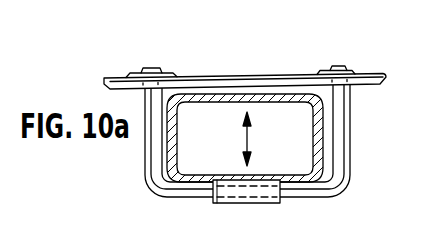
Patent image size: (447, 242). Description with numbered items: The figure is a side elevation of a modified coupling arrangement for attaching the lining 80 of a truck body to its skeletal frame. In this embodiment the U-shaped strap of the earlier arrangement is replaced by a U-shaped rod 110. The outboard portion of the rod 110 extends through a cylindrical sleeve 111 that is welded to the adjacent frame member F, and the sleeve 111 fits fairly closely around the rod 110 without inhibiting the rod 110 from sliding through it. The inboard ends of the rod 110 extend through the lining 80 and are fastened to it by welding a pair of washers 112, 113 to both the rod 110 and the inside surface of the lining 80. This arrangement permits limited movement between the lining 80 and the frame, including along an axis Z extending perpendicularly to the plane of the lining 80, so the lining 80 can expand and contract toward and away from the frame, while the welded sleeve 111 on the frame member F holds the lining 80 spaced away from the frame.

The lining 80 is at (258, 74).
The U-shaped rod 110 is at (350, 168).
The cylindrical sleeve 111 is at (268, 203).
The washer 112 is at (168, 72).
The washer 113 is at (353, 70).
The frame member F is at (320, 138).
The axis Z is at (260, 139).